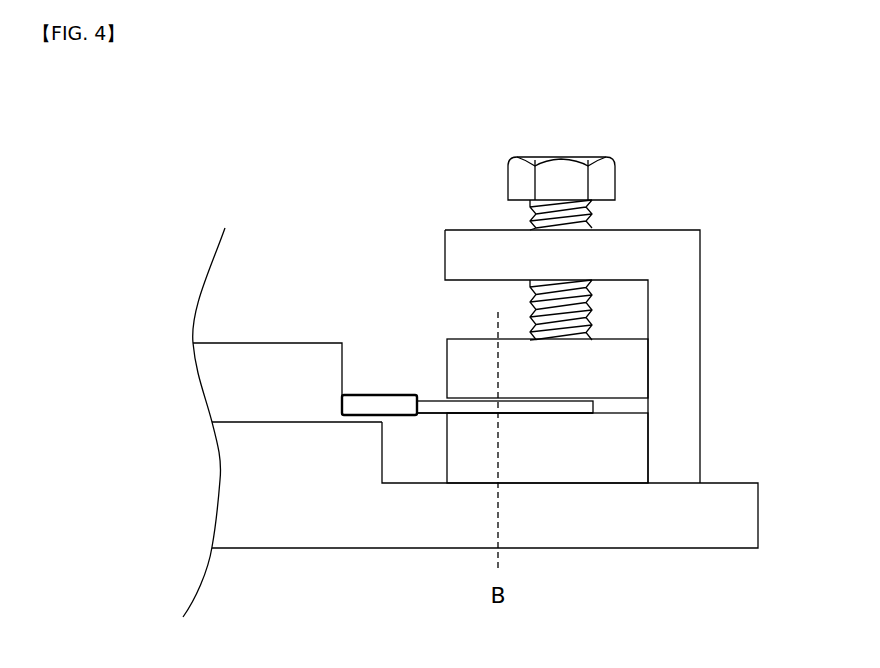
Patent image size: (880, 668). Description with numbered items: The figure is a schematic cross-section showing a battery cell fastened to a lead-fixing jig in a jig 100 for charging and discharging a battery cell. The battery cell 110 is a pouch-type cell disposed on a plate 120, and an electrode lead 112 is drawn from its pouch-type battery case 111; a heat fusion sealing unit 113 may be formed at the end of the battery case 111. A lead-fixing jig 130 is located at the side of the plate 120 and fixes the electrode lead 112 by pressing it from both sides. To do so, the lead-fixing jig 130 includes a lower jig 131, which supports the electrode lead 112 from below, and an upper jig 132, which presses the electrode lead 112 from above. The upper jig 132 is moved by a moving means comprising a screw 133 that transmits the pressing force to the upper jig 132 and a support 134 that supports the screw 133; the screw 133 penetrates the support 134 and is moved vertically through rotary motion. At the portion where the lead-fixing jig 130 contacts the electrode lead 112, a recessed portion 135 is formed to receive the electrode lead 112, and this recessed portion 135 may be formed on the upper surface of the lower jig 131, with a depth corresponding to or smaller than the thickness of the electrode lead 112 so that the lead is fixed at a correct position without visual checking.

The jig 100 is at (127, 129).
The battery cell 110 is at (267, 250).
The battery case 111 is at (213, 343).
The electrode lead 112 is at (433, 398).
The heat fusion sealing unit 113 is at (373, 393).
The plate 120 is at (305, 548).
The lead-fixing jig 130 is at (795, 172).
The lower jig 131 is at (640, 440).
The upper jig 132 is at (640, 365).
The screw 133 is at (618, 177).
The support 134 is at (702, 255).
The recessed portion 135 is at (540, 415).